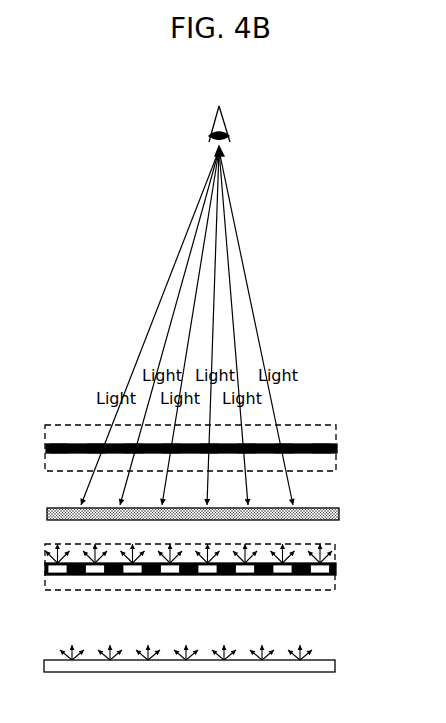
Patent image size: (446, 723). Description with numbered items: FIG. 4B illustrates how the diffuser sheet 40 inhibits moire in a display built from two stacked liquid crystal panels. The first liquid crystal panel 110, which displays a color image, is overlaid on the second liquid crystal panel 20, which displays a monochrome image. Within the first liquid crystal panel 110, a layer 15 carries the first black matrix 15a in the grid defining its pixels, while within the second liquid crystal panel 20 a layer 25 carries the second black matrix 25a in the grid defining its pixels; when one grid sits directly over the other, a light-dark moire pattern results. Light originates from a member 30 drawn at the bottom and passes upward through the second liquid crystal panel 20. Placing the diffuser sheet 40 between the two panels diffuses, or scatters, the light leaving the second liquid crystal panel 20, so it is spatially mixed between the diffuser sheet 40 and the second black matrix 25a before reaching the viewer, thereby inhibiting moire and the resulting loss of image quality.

The first liquid crystal panel 110 is at (312, 425).
The light blocking layer 15 is at (337, 449).
The first black matrix 15a is at (300, 443).
The diffuser sheet 40 is at (330, 508).
The second liquid crystal panel 20 is at (335, 545).
The reflective layer 25 is at (337, 568).
The second black matrix 25a is at (303, 575).
The light source substrate 30 is at (335, 663).